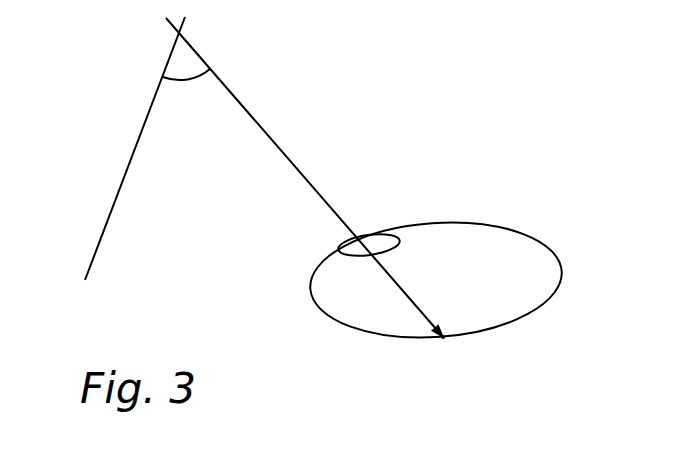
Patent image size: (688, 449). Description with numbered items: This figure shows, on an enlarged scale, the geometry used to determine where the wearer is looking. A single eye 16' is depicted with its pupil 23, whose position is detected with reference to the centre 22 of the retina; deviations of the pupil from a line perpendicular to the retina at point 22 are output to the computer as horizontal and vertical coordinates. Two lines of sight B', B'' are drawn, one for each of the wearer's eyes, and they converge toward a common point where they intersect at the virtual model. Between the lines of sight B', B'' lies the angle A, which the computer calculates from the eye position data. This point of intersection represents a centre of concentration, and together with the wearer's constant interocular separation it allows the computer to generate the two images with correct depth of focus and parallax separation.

The centre of the retina 22 is at (441, 337).
The pupil 23 is at (394, 252).
The eye 16' is at (437, 297).
The line of sight B' is at (304, 177).
The line of sight B'' is at (116, 148).
The angle A is at (186, 94).